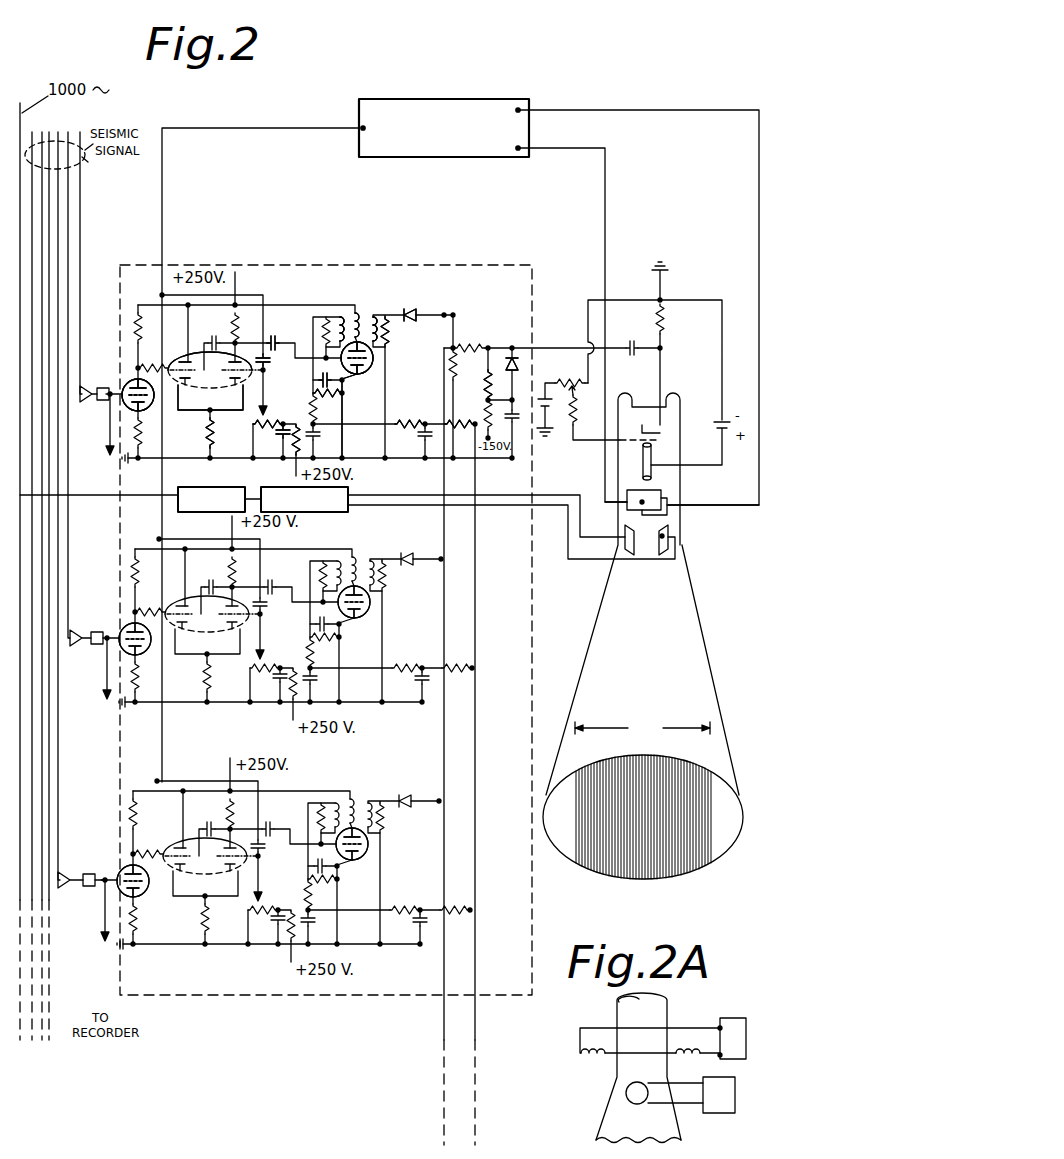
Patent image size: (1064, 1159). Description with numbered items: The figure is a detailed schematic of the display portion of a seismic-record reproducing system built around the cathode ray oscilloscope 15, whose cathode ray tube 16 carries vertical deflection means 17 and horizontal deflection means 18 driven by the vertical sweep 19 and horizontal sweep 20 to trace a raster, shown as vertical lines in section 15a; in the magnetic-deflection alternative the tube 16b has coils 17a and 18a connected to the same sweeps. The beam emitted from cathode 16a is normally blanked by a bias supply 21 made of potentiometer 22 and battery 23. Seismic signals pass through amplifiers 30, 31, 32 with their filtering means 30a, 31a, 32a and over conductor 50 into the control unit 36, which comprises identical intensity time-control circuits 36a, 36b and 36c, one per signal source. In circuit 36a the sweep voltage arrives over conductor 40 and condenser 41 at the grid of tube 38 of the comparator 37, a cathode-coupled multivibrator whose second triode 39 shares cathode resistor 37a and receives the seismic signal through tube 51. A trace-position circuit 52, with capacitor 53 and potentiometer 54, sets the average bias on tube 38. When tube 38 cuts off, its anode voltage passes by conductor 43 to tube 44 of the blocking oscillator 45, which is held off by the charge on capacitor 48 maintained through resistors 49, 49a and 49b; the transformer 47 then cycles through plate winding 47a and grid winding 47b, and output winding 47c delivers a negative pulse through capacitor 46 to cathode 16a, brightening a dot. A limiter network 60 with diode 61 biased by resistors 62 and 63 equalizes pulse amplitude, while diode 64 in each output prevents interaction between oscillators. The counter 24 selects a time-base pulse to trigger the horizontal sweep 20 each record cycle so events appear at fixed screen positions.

In FIG. 2, the cathode ray oscilloscope 15 is at (698, 607).
In FIG. 2, the raster section 15a is at (642, 728).
In FIG. 2, the cathode ray tube 16 is at (705, 693).
In FIG. 2, the cathode 16a is at (658, 425).
In FIG. 2A, the magnetic-deflection cathode ray tube 16b is at (668, 1008).
In FIG. 2, the vertical deflection means 17 is at (668, 497).
In FIG. 2A, the vertical deflection coil 17a is at (617, 1095).
In FIG. 2, the horizontal deflection means 18 is at (672, 535).
In FIG. 2A, the horizontal deflection coil 18a is at (600, 1057).
In FIG. 2, the vertical sweep circuit 19 is at (490, 110).
In FIG. 2A, the vertical sweep circuit 19 is at (730, 1090).
In FIG. 2, the horizontal sweep circuit 20 is at (348, 493).
In FIG. 2A, the horizontal sweep circuit 20 is at (733, 1020).
In FIG. 2, the bias supply 21 is at (575, 373).
In FIG. 2, the potentiometer 22 is at (576, 387).
In FIG. 2, the battery 23 is at (550, 394).
In FIG. 2, the counter 24 is at (207, 487).
In FIG. 2, the amplifier 30 is at (86, 382).
In FIG. 2, the filtering means 30a is at (104, 386).
In FIG. 2, the amplifier 31 is at (75, 627).
In FIG. 2, the filtering means 31a is at (98, 630).
In FIG. 2, the amplifier 32 is at (63, 869).
In FIG. 2, the filtering means 32a is at (90, 872).
In FIG. 2, the control unit 36 is at (385, 265).
In FIG. 2, the intensity time-control circuit 36a is at (312, 303).
In FIG. 2, the intensity time-control circuit 36b is at (353, 541).
In FIG. 2, the intensity time-control circuit 36c is at (345, 780).
In FIG. 2, the comparator 37 is at (214, 331).
In FIG. 2, the cathode resistor 37a is at (212, 440).
In FIG. 2, the triode tube 38 is at (238, 403).
In FIG. 2, the triode tube 39 is at (176, 395).
In FIG. 2, the conductor 40 is at (163, 217).
In FIG. 2, the condenser 41 is at (270, 364).
In FIG. 2, the conductor 43 is at (276, 340).
In FIG. 2, the blocking oscillator tube 44 is at (374, 362).
In FIG. 2, the blocking oscillator 45 is at (371, 400).
In FIG. 2, the capacitor 46 is at (630, 333).
In FIG. 2, the transformer 47 is at (364, 300).
In FIG. 2, the plate winding 47a is at (374, 318).
In FIG. 2, the secondary (grid) winding 47b is at (342, 314).
In FIG. 2, the output winding 47c is at (384, 315).
In FIG. 2, the capacitor 48 is at (325, 373).
In FIG. 2, the resistor 49 is at (462, 420).
In FIG. 2, the resistor 49a is at (407, 420).
In FIG. 2, the resistor 49b is at (331, 402).
In FIG. 2, the conductor 50 is at (80, 308).
In FIG. 2, the tube 51 is at (135, 413).
In FIG. 2, the trace-position control circuit 52 is at (268, 418).
In FIG. 2, the capacitor 53 is at (279, 436).
In FIG. 2, the potentiometer 54 is at (296, 422).
In FIG. 2, the clipping or limiter network 60 is at (520, 333).
In FIG. 2, the diode 61 is at (512, 374).
In FIG. 2, the resistor 62 is at (487, 384).
In FIG. 2, the resistor 63 is at (492, 416).
In FIG. 2, the diode 64 is at (416, 313).